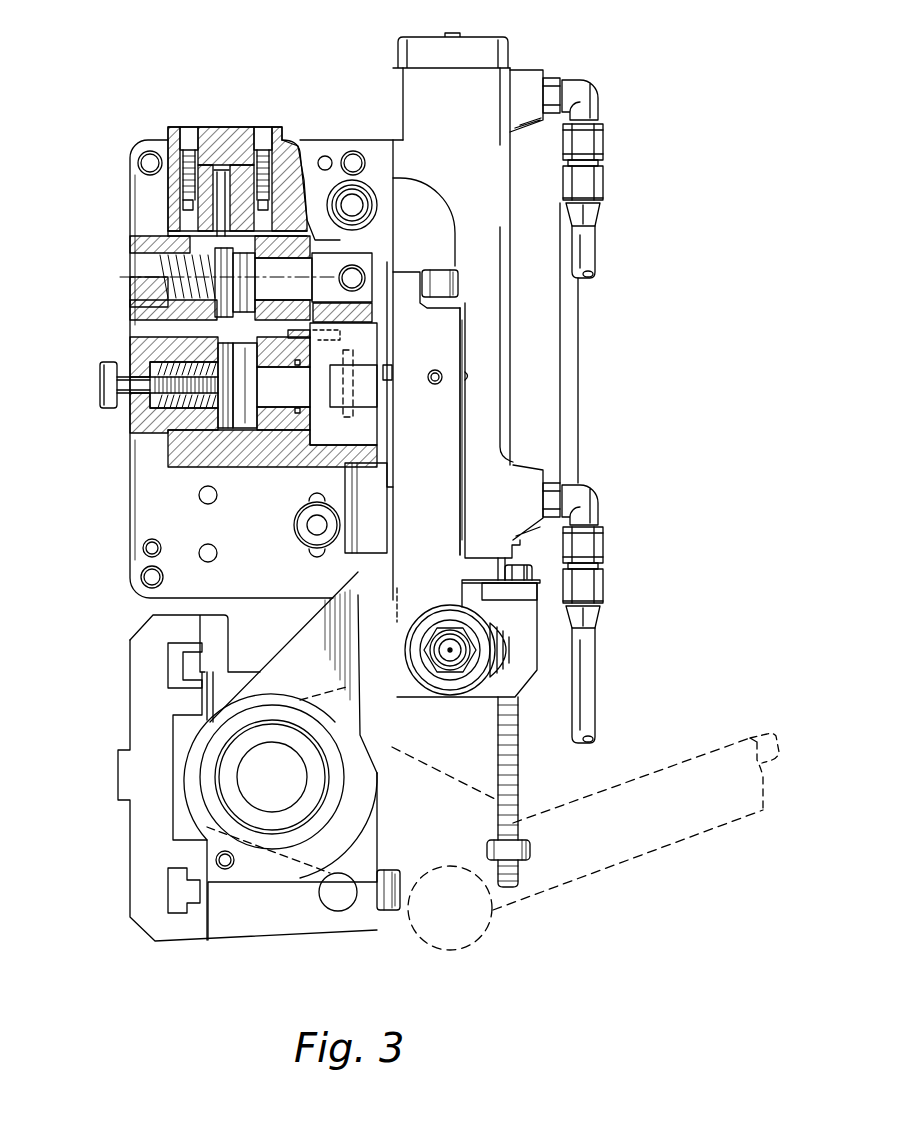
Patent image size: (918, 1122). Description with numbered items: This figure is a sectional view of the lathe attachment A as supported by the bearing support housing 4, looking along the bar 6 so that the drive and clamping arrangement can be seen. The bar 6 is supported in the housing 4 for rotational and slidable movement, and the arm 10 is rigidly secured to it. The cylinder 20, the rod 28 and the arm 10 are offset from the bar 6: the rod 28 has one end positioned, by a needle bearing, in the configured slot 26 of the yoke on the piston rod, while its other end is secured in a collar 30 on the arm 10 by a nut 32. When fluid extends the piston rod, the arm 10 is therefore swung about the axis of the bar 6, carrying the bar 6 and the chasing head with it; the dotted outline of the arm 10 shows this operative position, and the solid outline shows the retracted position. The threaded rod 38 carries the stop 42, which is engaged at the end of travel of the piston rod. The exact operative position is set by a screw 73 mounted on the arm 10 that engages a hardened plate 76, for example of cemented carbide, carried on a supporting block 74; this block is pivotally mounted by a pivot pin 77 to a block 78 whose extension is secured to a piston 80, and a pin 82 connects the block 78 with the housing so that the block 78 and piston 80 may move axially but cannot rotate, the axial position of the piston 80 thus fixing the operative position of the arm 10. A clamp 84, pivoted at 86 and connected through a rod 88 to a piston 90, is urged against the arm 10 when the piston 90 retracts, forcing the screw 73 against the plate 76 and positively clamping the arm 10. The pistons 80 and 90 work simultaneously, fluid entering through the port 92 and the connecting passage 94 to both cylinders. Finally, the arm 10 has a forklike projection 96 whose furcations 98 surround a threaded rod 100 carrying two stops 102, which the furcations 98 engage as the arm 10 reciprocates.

The lathe attachment A is at (518, 39).
The bearing support housing 4 is at (235, 932).
The bar 6 is at (227, 788).
The arm 10 is at (386, 712).
The cylinder 20 is at (490, 322).
The configured slot 26 is at (513, 672).
The rod 28 is at (445, 626).
The collar 30 is at (420, 648).
The nut 32 is at (447, 660).
The threaded rod 38 is at (520, 771).
The stop 42 is at (532, 851).
The screw 73 is at (465, 380).
The supporting block 74 is at (378, 401).
The hardened plate 76 is at (392, 372).
The pivot pin 77 is at (389, 343).
The block 78 is at (338, 438).
The piston 80 is at (248, 427).
The pin 82 is at (383, 341).
The clamp 84 is at (437, 197).
The pivot 86 is at (370, 207).
The rod 88 is at (293, 252).
The piston 90 is at (236, 203).
The port 92 is at (237, 181).
The connecting passage 94 is at (159, 375).
The forklike projection 96 is at (342, 500).
The furcations 98 is at (308, 497).
The threaded rod 100 is at (312, 524).
The stops 102 is at (296, 518).